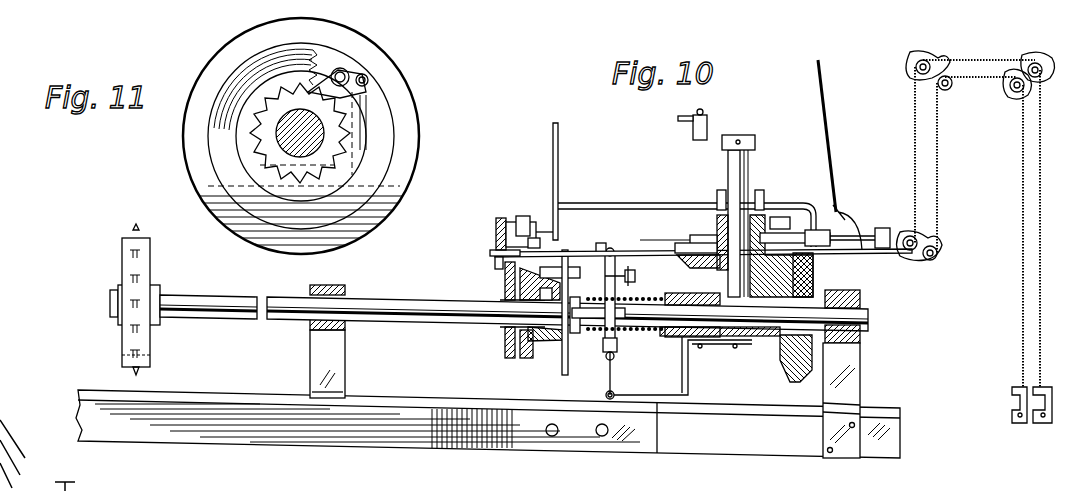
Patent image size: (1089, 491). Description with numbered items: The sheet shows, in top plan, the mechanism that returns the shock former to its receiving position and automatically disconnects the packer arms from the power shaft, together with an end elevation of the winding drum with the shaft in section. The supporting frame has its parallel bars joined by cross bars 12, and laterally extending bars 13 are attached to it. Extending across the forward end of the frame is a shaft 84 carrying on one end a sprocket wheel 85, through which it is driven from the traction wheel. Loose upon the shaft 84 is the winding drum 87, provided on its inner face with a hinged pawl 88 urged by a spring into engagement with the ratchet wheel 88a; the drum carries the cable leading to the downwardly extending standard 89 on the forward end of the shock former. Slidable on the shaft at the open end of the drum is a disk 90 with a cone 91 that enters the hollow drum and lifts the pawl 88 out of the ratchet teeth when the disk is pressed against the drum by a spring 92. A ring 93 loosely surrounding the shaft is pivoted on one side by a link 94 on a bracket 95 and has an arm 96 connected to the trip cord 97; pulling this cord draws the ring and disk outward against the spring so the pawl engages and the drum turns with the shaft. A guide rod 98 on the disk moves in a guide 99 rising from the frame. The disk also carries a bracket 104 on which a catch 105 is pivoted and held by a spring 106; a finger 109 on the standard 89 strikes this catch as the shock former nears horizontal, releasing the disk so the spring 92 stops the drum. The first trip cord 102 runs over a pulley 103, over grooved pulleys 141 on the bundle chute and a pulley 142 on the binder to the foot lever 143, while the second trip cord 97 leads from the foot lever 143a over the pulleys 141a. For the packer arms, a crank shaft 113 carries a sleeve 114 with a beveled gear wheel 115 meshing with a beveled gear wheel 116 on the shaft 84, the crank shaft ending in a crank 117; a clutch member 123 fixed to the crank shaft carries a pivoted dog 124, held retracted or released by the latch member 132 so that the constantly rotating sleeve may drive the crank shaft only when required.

In FIG. 10, the cross bars 12 is at (400, 442).
In FIG. 10, the laterally extending bars 13 is at (703, 450).
In FIG. 11, the shaft 84 is at (290, 150).
In FIG. 10, the shaft 84 is at (427, 302).
In FIG. 10, the sprocket wheel 85 is at (150, 346).
In FIG. 11, the winding drum 87 is at (418, 128).
In FIG. 10, the winding drum 87 is at (520, 360).
In FIG. 11, the pawl 88 is at (355, 72).
In FIG. 11, the ratchet wheel 88a is at (335, 140).
In FIG. 10, the ratchet wheel 88a is at (525, 268).
In FIG. 10, the standard 89 is at (512, 218).
In FIG. 10, the disk 90 is at (568, 360).
In FIG. 10, the cone 91 is at (548, 342).
In FIG. 10, the spring 92 is at (625, 297).
In FIG. 10, the ring 93 is at (617, 343).
In FIG. 10, the link 94 is at (614, 378).
In FIG. 10, the bracket 95 is at (690, 383).
In FIG. 10, the arm 96 is at (625, 250).
In FIG. 10, the trip cord 97 is at (648, 248).
In FIG. 10, the guide rod 98 is at (590, 280).
In FIG. 10, the guide 99 is at (638, 266).
In FIG. 10, the trip cord 102 is at (548, 238).
In FIG. 10, the pulley 103 is at (541, 245).
In FIG. 10, the bracket 104 is at (596, 243).
In FIG. 10, the catch 105 is at (490, 253).
In FIG. 10, the spring 106 is at (555, 272).
In FIG. 10, the finger 109 is at (499, 269).
In FIG. 10, the crank shaft 113 is at (742, 190).
In FIG. 10, the sleeve 114 is at (722, 245).
In FIG. 10, the beveled gear wheel 115 is at (780, 252).
In FIG. 10, the beveled gear wheel 116 is at (780, 358).
In FIG. 10, the crank 117 is at (748, 118).
In FIG. 10, the clutch member 123 is at (765, 220).
In FIG. 10, the dog 124 is at (692, 240).
In FIG. 10, the latch 132 is at (825, 268).
In FIG. 10, the grooved pulleys 141 is at (930, 64).
In FIG. 10, the pulleys 141a is at (948, 90).
In FIG. 10, the pulley 142 is at (1038, 62).
In FIG. 10, the foot lever 143 is at (1010, 418).
In FIG. 10, the foot lever 143a is at (1050, 405).